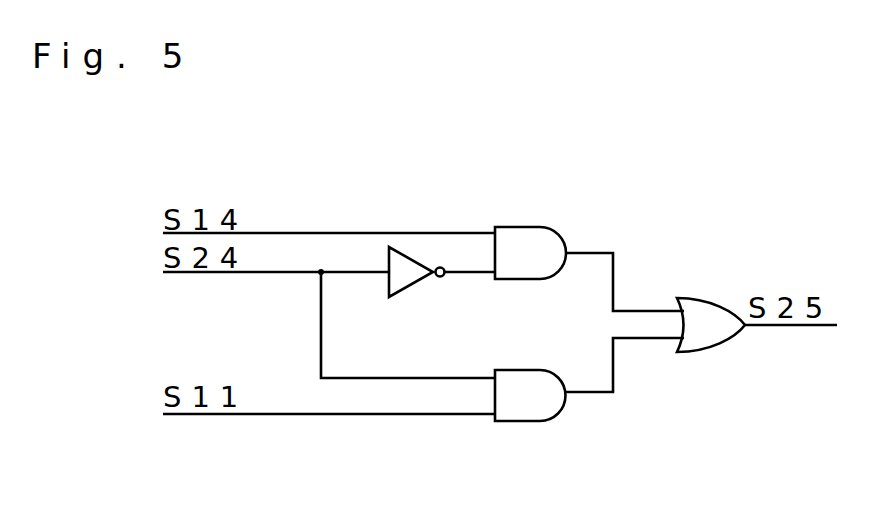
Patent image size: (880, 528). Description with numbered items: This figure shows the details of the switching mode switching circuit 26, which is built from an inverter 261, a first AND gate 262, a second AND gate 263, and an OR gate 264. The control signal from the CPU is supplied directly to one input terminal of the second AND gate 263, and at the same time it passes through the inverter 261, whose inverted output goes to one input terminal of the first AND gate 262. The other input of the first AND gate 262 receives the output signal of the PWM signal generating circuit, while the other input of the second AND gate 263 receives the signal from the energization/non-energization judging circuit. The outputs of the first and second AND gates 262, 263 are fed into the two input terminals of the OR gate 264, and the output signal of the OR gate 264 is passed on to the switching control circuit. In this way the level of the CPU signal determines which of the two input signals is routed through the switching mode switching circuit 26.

The switching mode switching circuit 26 is at (840, 208).
The inverter 261 is at (413, 284).
The first AND gate 262 is at (522, 227).
The second AND gate 263 is at (522, 423).
The OR gate 264 is at (702, 298).